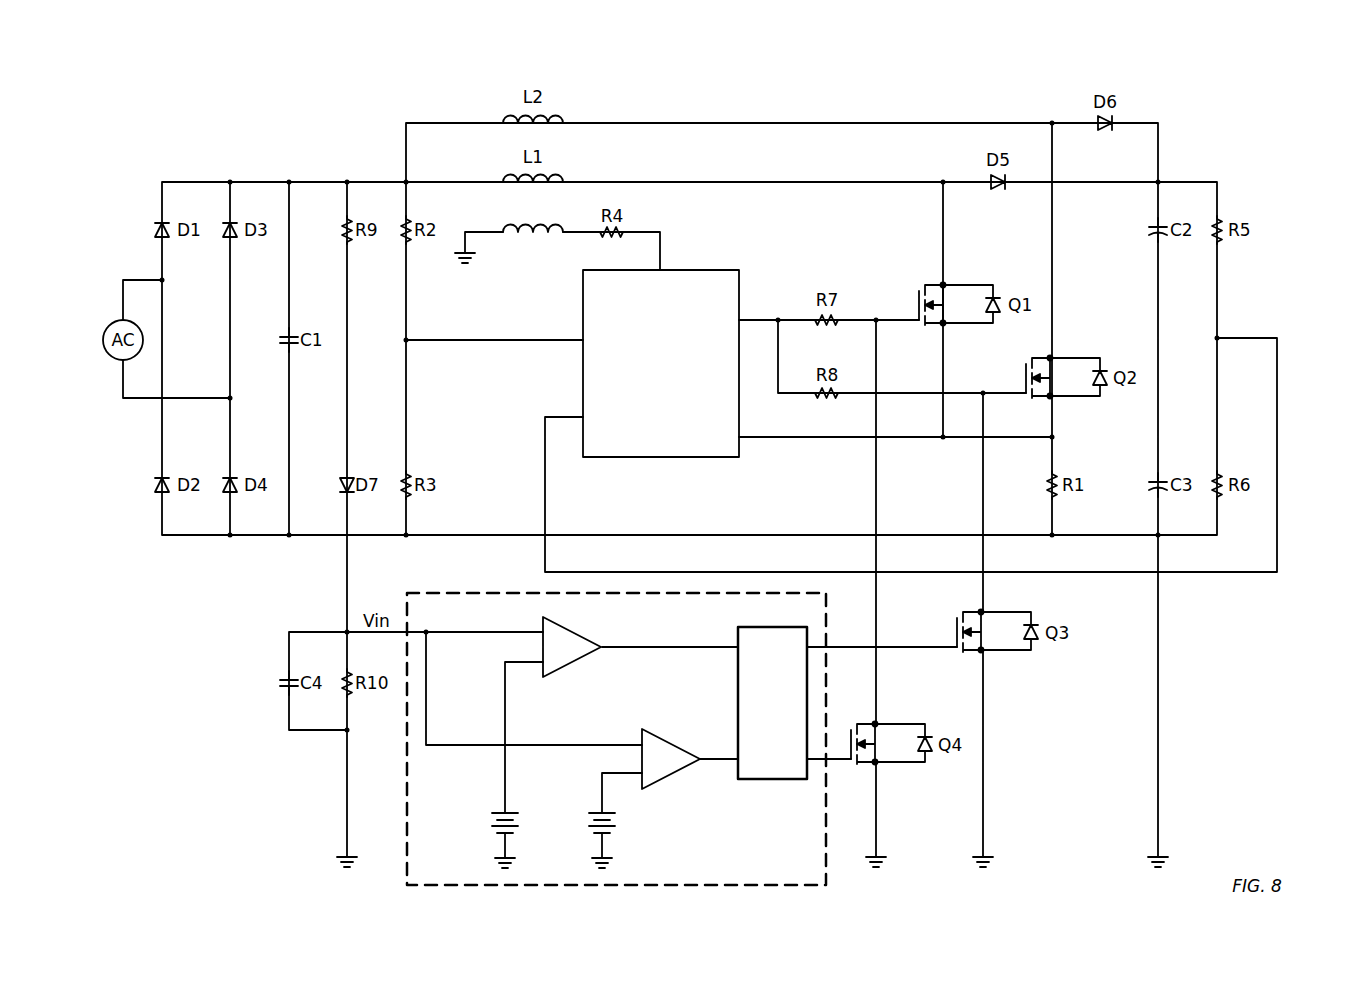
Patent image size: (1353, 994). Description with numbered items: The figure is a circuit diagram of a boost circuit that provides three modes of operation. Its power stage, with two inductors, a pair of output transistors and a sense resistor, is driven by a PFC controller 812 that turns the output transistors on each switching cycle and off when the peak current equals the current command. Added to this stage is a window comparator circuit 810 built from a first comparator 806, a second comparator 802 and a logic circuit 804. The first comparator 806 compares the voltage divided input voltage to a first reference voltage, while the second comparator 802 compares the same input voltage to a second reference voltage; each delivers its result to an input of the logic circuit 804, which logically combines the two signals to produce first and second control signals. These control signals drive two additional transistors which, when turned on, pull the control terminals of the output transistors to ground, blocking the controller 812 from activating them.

The PFC controller 812 is at (698, 268).
The window comparator circuit 810 is at (467, 592).
The first comparator 806 is at (574, 664).
The second comparator 802 is at (670, 775).
The logic circuit 804 is at (788, 729).